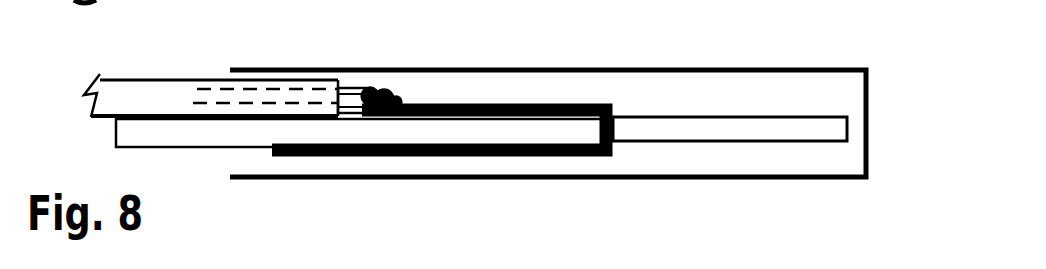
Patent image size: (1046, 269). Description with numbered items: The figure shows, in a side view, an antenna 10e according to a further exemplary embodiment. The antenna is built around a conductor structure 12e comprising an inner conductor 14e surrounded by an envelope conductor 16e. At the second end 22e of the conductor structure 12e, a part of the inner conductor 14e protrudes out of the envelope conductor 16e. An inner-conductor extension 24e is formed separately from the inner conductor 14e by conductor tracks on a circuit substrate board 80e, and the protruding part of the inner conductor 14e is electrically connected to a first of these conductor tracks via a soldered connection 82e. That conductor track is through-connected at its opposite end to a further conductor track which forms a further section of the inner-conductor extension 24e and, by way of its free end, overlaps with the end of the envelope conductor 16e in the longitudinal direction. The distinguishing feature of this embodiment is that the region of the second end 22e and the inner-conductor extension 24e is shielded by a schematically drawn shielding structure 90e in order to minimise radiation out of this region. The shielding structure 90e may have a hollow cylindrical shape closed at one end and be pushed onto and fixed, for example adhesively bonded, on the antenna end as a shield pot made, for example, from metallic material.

The antenna 10e is at (460, 53).
The conductor structure 12e is at (261, 134).
The inner conductor 14e is at (196, 89).
The envelope conductor 16e is at (202, 117).
The second end 22e is at (348, 75).
The inner-conductor extension 24e is at (634, 107).
The circuit substrate board 80e is at (747, 127).
The soldered connection 82e is at (400, 97).
The shielding structure 90e is at (670, 64).